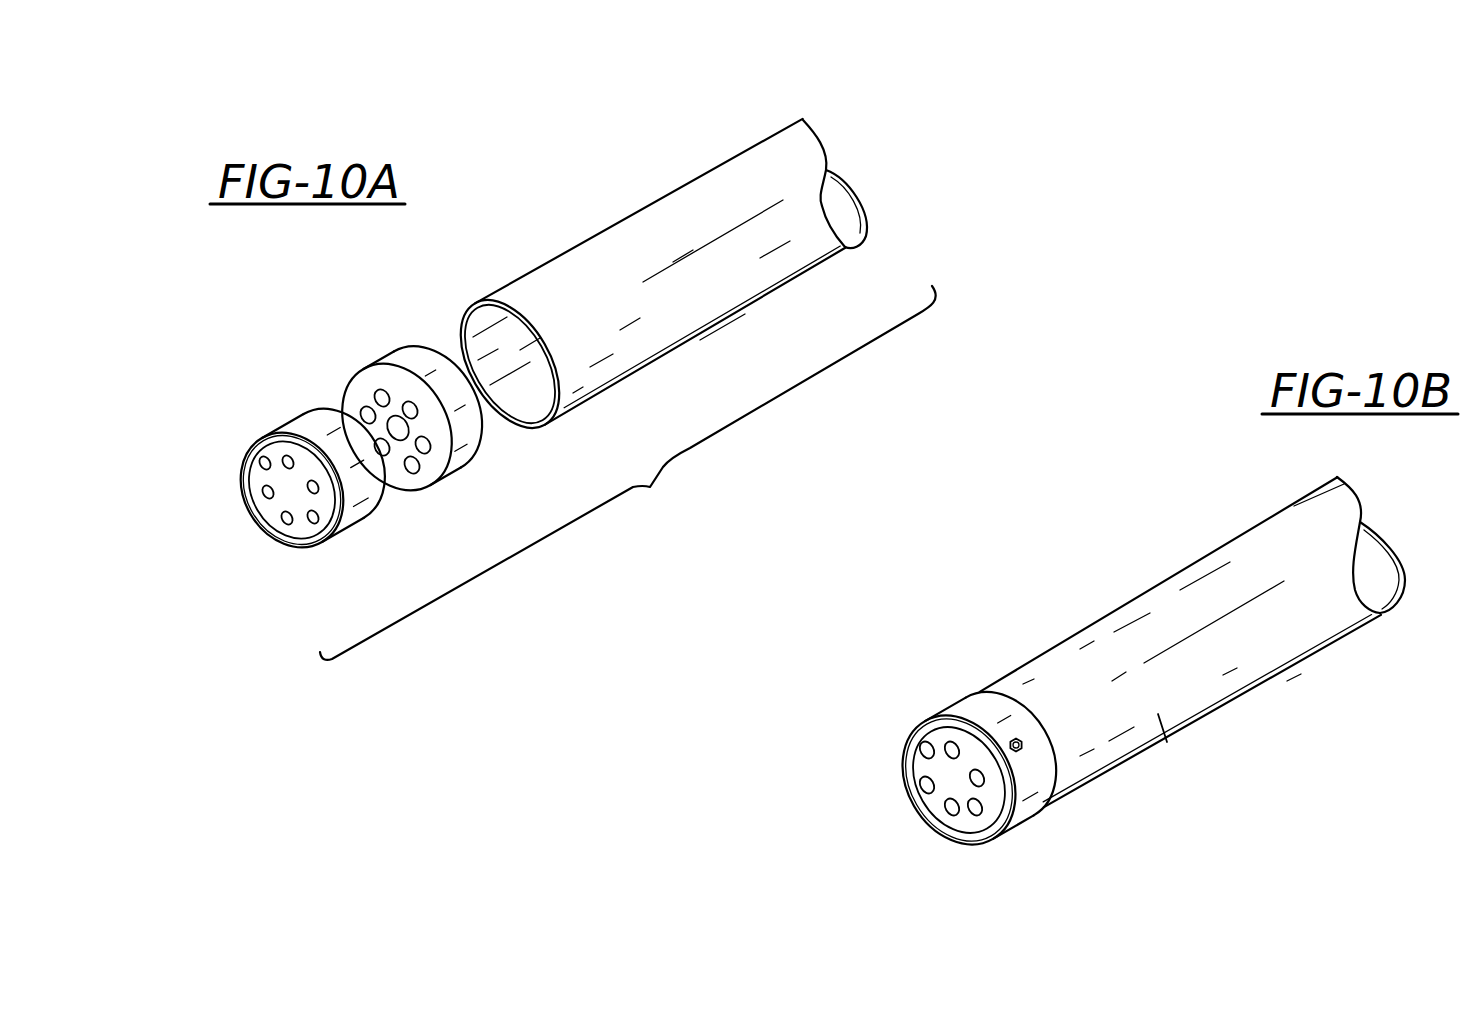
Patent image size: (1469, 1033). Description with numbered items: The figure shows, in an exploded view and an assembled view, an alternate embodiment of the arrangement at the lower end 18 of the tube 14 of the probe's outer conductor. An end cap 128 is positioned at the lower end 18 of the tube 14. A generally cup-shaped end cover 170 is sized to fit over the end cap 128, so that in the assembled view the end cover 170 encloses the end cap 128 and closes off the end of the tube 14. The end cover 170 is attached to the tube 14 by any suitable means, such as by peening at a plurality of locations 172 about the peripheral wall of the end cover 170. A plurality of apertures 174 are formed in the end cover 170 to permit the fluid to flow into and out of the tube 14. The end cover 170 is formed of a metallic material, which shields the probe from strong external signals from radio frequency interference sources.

In FIG. 10A, the tube 14 is at (604, 236).
In FIG. 10B, the tube 14 is at (1185, 595).
In FIG. 10A, the lower end 18 is at (530, 292).
In FIG. 10B, the lower end 18 is at (1163, 742).
In FIG. 10A, the end cap 128 is at (481, 484).
In FIG. 10A, the end cover 170 is at (357, 520).
In FIG. 10B, the end cover 170 is at (1034, 808).
In FIG. 10B, the locations 172 is at (1015, 737).
In FIG. 10A, the apertures 174 is at (287, 520).
In FIG. 10B, the apertures 174 is at (924, 787).